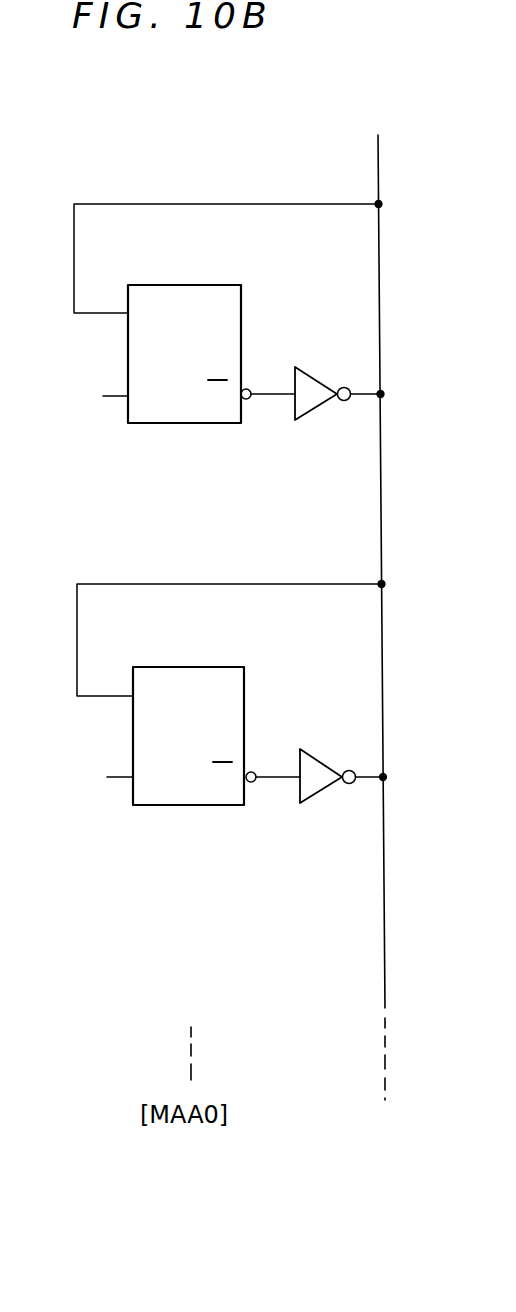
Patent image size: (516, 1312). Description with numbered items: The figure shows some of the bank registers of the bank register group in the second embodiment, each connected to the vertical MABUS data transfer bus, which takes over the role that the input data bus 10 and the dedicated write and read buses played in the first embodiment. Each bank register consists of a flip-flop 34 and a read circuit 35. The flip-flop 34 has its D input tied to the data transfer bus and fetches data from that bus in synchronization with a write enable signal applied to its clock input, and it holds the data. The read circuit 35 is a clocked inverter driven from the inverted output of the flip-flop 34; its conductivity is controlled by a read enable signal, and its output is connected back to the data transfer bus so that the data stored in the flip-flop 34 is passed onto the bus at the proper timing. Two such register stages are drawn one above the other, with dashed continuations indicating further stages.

The input data bus 10 is at (378, 160).
The flip-flop 34 is at (160, 423).
The read circuit 35 is at (312, 415).